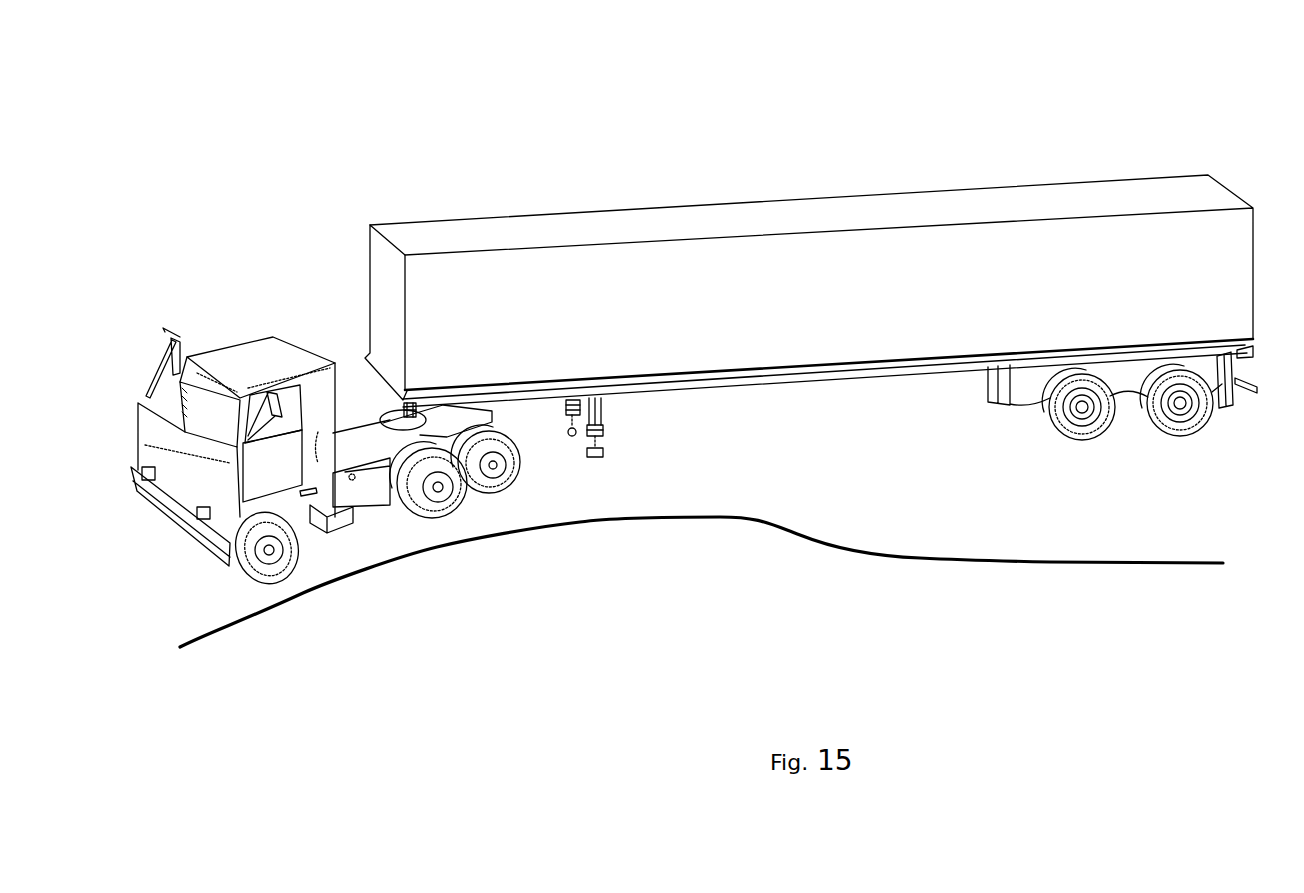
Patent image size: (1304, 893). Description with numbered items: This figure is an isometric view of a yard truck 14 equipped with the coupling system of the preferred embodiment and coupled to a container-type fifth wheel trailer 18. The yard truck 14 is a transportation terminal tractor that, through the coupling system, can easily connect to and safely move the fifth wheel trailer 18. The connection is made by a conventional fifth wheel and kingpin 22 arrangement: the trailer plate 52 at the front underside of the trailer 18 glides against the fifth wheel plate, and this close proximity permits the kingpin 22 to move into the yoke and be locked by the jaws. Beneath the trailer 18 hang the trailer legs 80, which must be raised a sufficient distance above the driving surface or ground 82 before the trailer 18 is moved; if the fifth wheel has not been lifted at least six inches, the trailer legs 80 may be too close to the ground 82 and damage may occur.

The yard truck 14 is at (243, 300).
The fifth wheel trailer 18 is at (682, 175).
The kingpin 22 is at (467, 483).
The trailer plate 52 is at (403, 413).
The trailer legs 80 is at (603, 408).
The driving surface/ground 82 is at (990, 473).